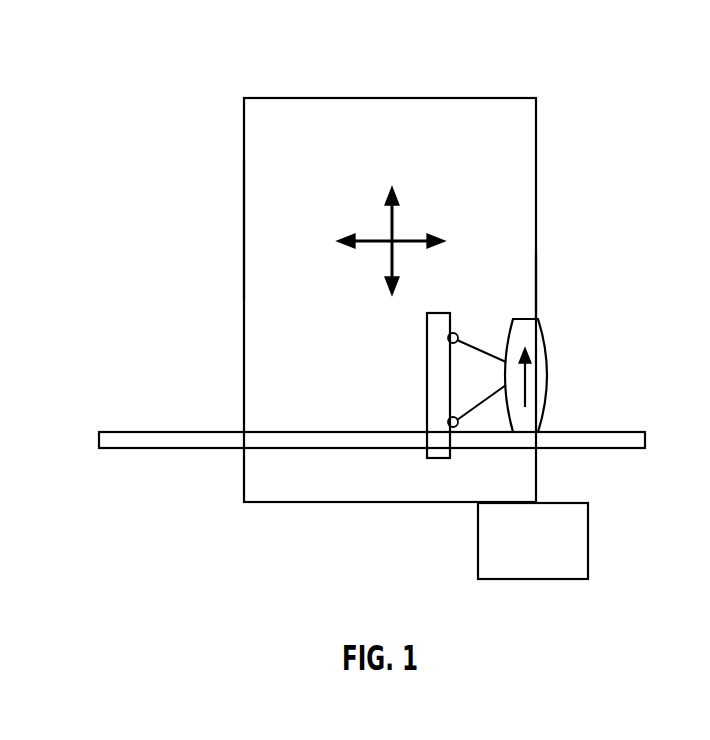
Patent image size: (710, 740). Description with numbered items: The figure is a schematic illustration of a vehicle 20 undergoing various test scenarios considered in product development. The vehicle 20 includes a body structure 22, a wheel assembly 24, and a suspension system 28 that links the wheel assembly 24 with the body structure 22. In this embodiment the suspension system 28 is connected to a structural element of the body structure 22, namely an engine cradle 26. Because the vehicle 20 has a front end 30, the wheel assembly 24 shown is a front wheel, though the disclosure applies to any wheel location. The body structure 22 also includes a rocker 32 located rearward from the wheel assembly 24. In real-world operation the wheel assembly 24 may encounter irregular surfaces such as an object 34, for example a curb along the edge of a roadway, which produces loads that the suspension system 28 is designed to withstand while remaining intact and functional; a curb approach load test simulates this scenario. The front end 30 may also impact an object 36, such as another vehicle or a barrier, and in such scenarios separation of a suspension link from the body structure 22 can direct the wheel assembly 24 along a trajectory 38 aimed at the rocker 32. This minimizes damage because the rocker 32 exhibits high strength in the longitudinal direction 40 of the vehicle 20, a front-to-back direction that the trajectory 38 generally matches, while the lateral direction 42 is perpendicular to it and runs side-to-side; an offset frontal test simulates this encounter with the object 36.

The vehicle 20 is at (470, 86).
The body structure 22 is at (244, 223).
The wheel assembly 24 is at (545, 335).
The engine cradle 26 is at (432, 384).
The suspension system 28 is at (468, 344).
The front end 30 is at (393, 503).
The rocker 32 is at (537, 292).
The object 34 is at (608, 451).
The object 36 is at (589, 540).
The trajectory 38 is at (527, 380).
The longitudinal direction 40 is at (393, 215).
The lateral direction 42 is at (368, 238).